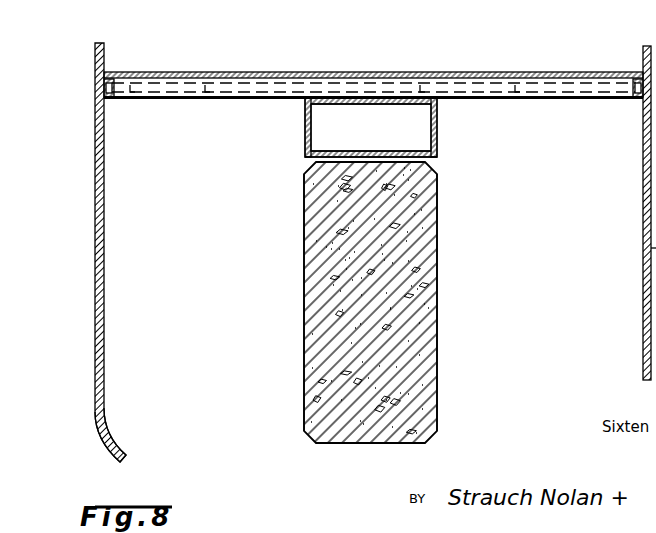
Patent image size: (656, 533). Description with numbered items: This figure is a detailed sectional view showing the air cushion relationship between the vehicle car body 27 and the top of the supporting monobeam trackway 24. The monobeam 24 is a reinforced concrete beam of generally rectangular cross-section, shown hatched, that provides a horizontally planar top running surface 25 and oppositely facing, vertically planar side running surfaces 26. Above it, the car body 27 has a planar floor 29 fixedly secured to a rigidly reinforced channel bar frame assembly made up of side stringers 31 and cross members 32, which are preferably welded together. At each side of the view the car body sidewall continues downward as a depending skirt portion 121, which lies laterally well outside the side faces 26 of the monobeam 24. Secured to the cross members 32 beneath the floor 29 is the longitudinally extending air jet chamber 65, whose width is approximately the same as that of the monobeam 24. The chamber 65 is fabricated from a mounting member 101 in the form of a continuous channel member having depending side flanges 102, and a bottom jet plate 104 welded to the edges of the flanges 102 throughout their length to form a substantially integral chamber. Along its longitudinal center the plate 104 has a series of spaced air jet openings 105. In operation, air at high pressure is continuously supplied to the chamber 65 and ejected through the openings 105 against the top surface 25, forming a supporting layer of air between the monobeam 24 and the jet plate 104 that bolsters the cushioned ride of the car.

The monobeam trackway 24 is at (444, 345).
The top running surface 25 is at (411, 158).
The side running surfaces 26 is at (305, 272).
The car body 27 is at (93, 209).
The planar floor 29 is at (424, 72).
The side stringers 31 is at (113, 88).
The cross members 32 is at (539, 90).
The air jet chamber 65 is at (301, 141).
The mounting member 101 is at (321, 97).
The depending side flanges 102 is at (305, 118).
The bottom jet plate 104 is at (343, 151).
The air jet openings 105 is at (372, 152).
The depending skirt portion 121 is at (104, 301).